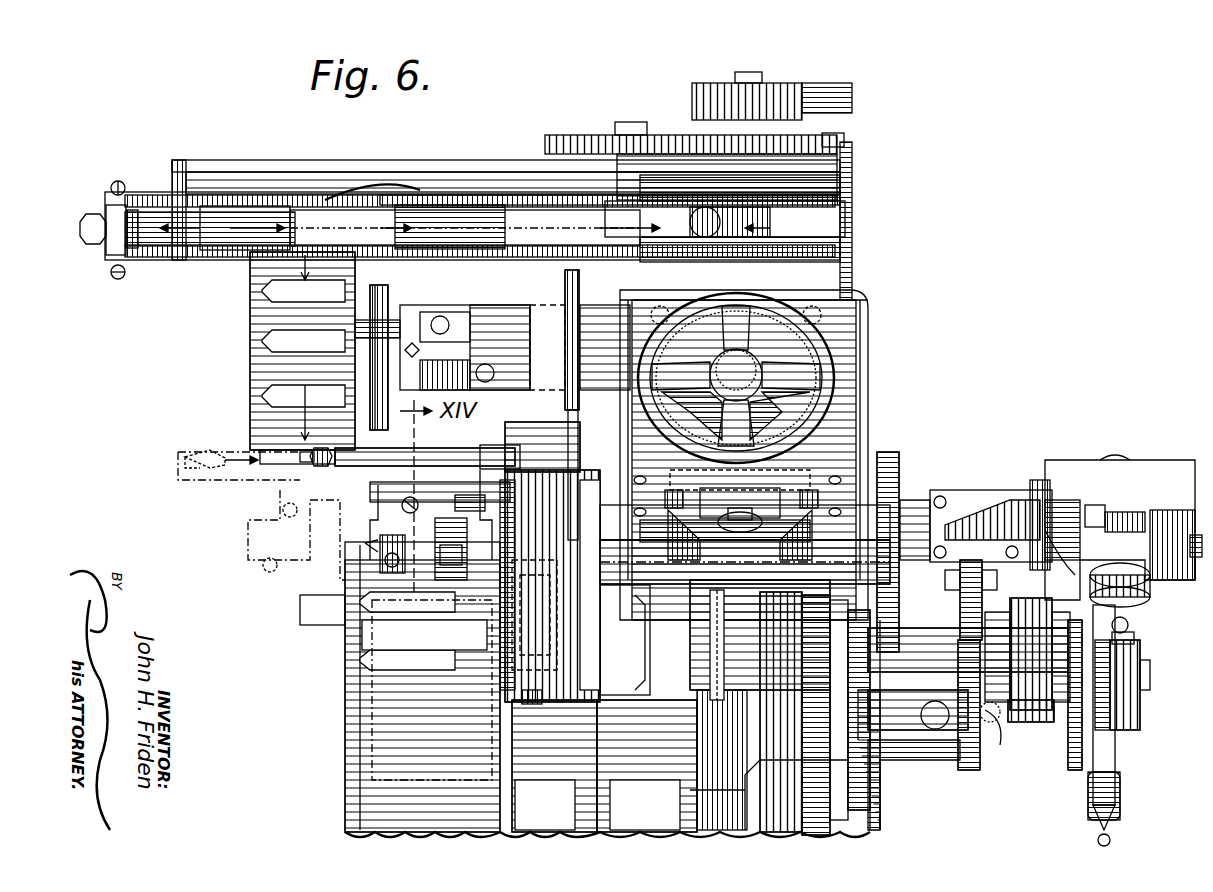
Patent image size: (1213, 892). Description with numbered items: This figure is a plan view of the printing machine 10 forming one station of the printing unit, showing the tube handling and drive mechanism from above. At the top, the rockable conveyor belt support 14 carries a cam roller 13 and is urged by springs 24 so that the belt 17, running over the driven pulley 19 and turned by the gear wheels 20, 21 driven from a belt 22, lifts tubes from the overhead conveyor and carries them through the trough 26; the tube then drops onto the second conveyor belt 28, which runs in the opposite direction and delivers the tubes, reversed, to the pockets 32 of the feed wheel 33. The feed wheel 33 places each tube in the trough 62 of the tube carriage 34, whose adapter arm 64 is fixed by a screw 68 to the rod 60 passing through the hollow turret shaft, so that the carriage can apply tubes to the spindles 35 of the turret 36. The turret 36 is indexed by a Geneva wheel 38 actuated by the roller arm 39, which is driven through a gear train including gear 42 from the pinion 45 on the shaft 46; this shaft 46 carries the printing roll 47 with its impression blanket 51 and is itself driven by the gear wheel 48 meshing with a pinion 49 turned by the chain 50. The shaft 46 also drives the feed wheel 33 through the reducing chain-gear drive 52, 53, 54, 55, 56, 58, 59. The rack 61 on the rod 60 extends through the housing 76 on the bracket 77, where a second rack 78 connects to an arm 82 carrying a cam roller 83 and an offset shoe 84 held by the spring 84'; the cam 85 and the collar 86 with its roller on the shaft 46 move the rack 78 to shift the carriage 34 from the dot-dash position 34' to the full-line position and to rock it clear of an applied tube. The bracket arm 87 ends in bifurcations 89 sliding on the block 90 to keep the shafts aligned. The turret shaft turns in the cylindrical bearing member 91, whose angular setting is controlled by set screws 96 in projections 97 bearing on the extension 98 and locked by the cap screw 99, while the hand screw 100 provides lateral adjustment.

The printing machine 10 is at (918, 334).
The cam roller 13 is at (102, 239).
The rockable conveyor belt support 14 is at (430, 205).
The belt 17 is at (465, 228).
The driven pulley 19 is at (620, 200).
The gear wheel 20 is at (668, 135).
The gear wheel 21 is at (846, 140).
The belt 22 is at (852, 99).
The springs 24 is at (118, 230).
The trough 26 is at (503, 205).
The second conveyor belt 28 is at (190, 246).
The pockets 32 is at (258, 302).
The feed wheel 33 is at (255, 300).
The tube carriage 34 is at (425, 515).
The dot-dash position of carriage 34' is at (261, 515).
The spindles 35 is at (390, 444).
The turret 36 is at (560, 422).
The Geneva wheel 38 is at (892, 446).
The roller arm 39 is at (918, 660).
The gear train gear 42 is at (1040, 660).
The pinion 45 is at (1040, 724).
The shaft 46 is at (1140, 668).
The printing roll 47 is at (358, 618).
The gear wheel 48 is at (772, 664).
The pinion 49 is at (803, 558).
The chain 50 is at (708, 647).
The impression blanket 51 is at (380, 640).
The reducing chain-gear drive element 52 is at (532, 705).
The reducing chain-gear drive element 53 is at (550, 512).
The reducing chain-gear drive element 54 is at (551, 604).
The reducing chain-gear drive element 55 is at (578, 420).
The reducing chain-gear drive element 56 is at (565, 300).
The reducing chain-gear drive element 58 is at (388, 292).
The reducing chain-gear drive element 59 is at (400, 312).
The rod 60 is at (474, 556).
The rack 61 is at (1196, 560).
The trough 62 is at (406, 455).
The adapter arm 64 is at (470, 512).
The screw 68 is at (414, 534).
The housing 76 is at (1120, 527).
The bracket 77 is at (955, 492).
The second rack 78 is at (1108, 516).
The arm 82 is at (1130, 627).
The cam roller 83 is at (1135, 640).
The offset shoe 84 is at (1128, 725).
The spring 84' is at (1120, 796).
The cam 85 is at (1118, 690).
The collar 86 is at (1076, 752).
The arm 87 is at (972, 568).
The bifurcations 89 is at (975, 750).
The block 90 is at (1002, 724).
The cylindrical bearing member 91 is at (745, 544).
The set screws 96 is at (665, 498).
The projections 97 is at (740, 535).
The extension 98 is at (740, 489).
The cap screw 99 is at (740, 527).
The hand screw 100 is at (808, 340).